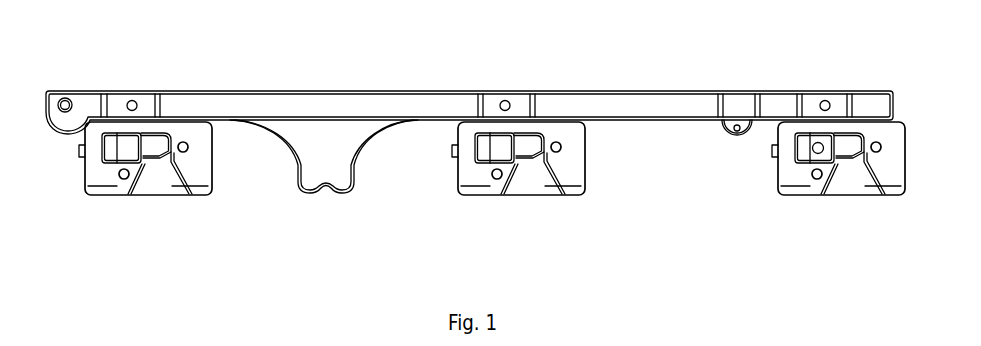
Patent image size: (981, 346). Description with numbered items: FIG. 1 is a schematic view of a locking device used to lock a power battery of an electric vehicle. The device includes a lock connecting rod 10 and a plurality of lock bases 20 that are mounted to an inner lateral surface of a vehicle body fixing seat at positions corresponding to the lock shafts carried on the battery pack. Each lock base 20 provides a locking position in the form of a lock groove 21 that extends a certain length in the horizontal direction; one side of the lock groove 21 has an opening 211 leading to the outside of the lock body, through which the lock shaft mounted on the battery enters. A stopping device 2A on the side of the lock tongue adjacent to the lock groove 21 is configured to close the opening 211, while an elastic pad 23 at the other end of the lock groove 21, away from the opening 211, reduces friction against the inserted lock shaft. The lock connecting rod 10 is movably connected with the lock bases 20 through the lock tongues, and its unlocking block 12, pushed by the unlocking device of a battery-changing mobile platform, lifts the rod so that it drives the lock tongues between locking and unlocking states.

The lock connecting rod 10 is at (606, 90).
The unlocking block 12 is at (345, 195).
The lock base 20 is at (518, 208).
The lock groove 21 is at (127, 152).
The stopping device 2A is at (537, 191).
The elastic pad 23 is at (808, 191).
The opening 211 is at (857, 217).